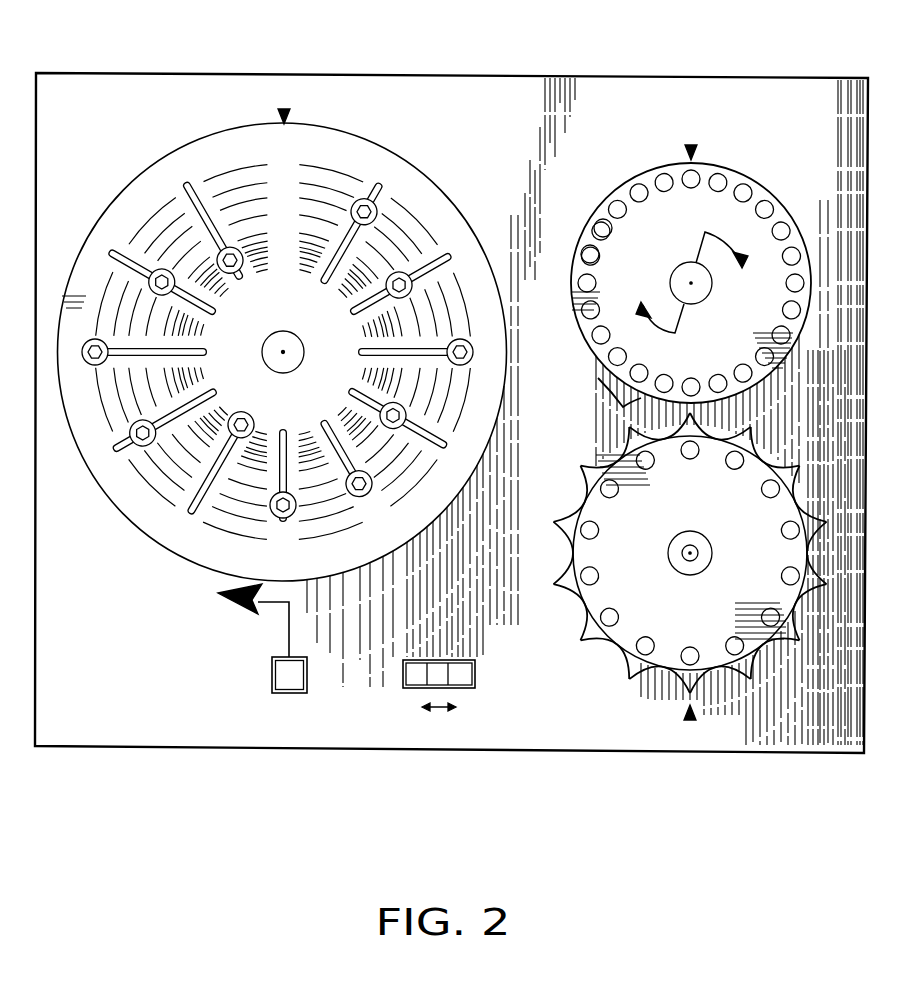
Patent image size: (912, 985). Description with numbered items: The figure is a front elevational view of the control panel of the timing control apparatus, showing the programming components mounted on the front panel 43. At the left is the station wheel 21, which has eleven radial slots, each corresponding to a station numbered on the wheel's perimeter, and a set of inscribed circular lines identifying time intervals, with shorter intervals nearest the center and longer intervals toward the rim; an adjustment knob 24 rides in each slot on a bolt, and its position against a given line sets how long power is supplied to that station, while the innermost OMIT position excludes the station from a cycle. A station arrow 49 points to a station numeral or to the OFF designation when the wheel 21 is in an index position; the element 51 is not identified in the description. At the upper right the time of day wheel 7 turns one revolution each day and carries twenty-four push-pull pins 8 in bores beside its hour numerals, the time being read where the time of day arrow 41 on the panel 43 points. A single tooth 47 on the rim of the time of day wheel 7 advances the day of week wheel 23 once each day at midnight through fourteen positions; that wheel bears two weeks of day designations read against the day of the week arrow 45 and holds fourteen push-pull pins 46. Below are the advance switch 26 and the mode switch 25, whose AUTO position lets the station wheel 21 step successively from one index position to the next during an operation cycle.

The time of day wheel 7 is at (620, 188).
The push-pull pins 8 is at (585, 249).
The station wheel 21 is at (237, 142).
The day of week wheel 23 is at (653, 568).
The adjustment knob 24 is at (381, 187).
The mode switch 25 is at (407, 673).
The advance switch 26 is at (287, 670).
The time of day arrow 41 is at (702, 152).
The front panel 43 is at (673, 78).
The day of the week arrow 45 is at (680, 704).
The push-pull pins 46 is at (769, 616).
The single tooth 47 is at (618, 404).
The station arrow 49 is at (290, 113).
The station slot 51 is at (185, 183).